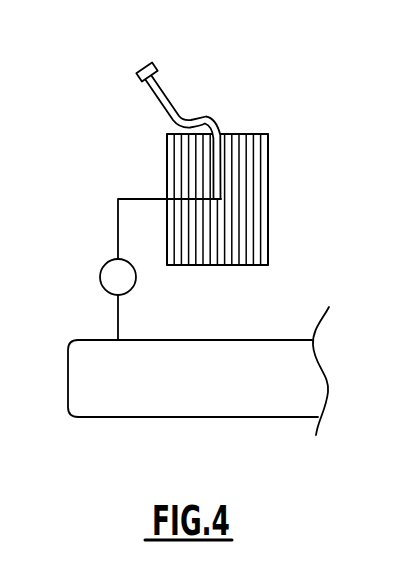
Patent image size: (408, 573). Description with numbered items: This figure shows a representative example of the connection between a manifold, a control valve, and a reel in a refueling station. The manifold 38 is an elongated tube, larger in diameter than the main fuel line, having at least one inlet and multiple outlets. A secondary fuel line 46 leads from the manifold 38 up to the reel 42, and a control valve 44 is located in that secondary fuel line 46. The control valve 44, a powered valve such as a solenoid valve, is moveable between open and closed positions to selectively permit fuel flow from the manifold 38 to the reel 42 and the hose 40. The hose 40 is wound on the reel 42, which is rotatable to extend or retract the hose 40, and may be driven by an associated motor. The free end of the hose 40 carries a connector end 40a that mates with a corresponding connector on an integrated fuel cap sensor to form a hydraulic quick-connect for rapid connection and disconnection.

The manifold 38 is at (168, 417).
The hose 40 is at (163, 97).
The connector end 40a is at (158, 63).
The reel 42 is at (269, 146).
The control valve 44 is at (105, 265).
The secondary fuel line 46 is at (119, 314).